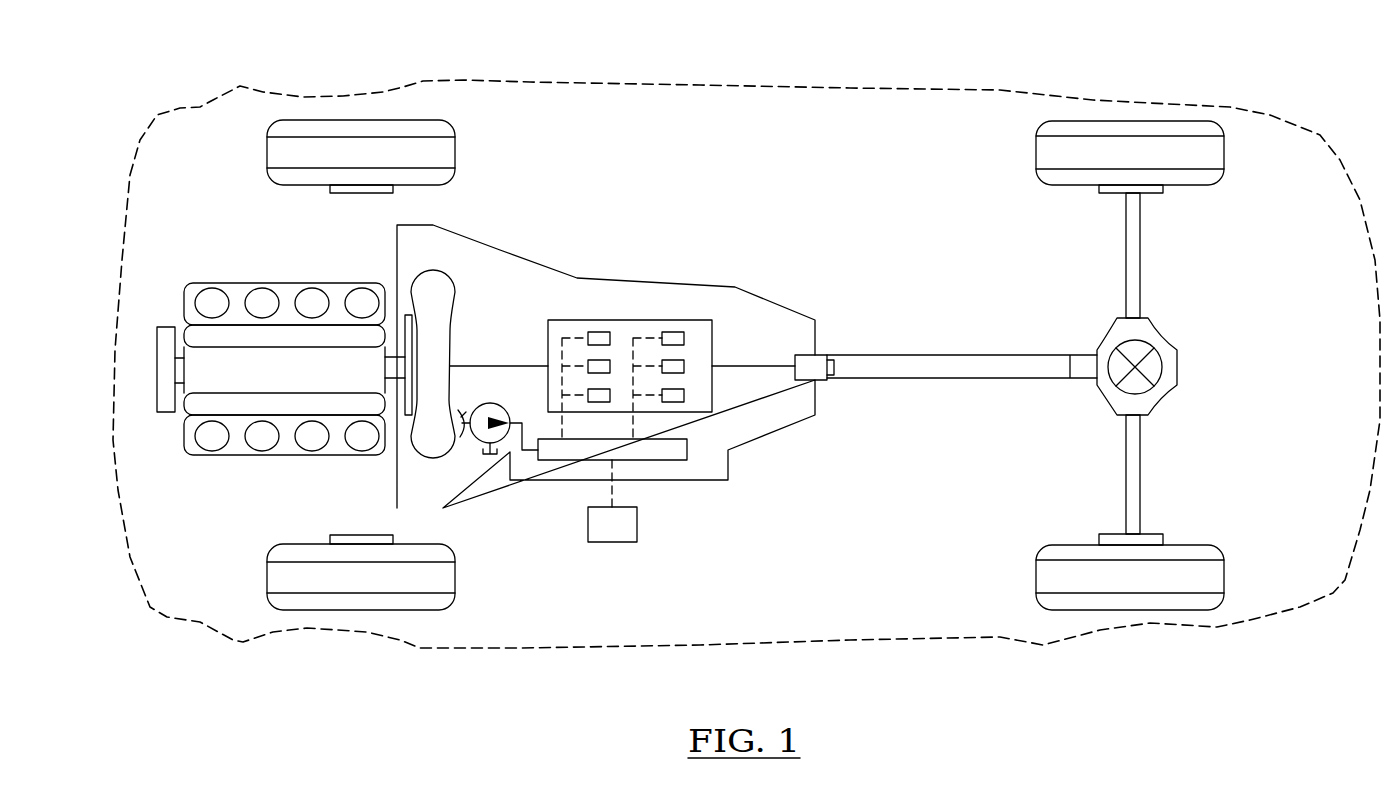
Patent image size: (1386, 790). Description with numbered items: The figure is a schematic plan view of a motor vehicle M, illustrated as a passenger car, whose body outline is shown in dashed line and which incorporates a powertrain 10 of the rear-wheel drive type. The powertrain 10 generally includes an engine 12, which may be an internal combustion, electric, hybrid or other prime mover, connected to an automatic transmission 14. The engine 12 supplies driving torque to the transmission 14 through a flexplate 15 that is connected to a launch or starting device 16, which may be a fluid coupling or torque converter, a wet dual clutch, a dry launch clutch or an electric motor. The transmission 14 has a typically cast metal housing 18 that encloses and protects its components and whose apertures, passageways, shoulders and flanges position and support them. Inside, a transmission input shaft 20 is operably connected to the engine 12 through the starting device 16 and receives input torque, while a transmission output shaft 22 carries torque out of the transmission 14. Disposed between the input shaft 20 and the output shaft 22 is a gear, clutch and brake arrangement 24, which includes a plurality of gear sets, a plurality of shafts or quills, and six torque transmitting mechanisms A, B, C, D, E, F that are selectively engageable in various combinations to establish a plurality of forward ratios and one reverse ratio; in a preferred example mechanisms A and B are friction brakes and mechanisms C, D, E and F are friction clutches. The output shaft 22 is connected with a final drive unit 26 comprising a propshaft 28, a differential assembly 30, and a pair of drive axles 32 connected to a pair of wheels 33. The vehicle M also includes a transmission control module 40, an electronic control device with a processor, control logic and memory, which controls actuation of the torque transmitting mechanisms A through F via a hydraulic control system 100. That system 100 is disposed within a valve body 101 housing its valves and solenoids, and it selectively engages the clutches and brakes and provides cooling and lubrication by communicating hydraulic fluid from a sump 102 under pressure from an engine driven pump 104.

The motor vehicle M is at (619, 80).
The powertrain 10 is at (830, 162).
The engine 12 is at (290, 384).
The automatic transmission 14 is at (620, 262).
The flexplate 15 is at (405, 316).
The launch or starting device 16 is at (444, 276).
The housing 18 is at (784, 300).
The transmission input shaft 20 is at (465, 366).
The transmission output shaft 22 is at (767, 368).
The gear, clutch and brake arrangement 24 is at (636, 335).
The final drive unit 26 is at (1031, 330).
The propshaft 28 is at (893, 354).
The differential assembly 30 is at (1178, 365).
The drive axles 32 is at (1125, 240).
The wheels 33 is at (1205, 187).
The transmission control module 40 is at (601, 545).
The hydraulic control system 100 is at (665, 452).
The valve body 101 is at (548, 462).
The sump 102 is at (487, 460).
The engine driven pump 104 is at (492, 403).
The torque transmitting mechanism A is at (605, 332).
The torque transmitting mechanism B is at (588, 362).
The torque transmitting mechanism C is at (588, 394).
The torque transmitting mechanism D is at (670, 332).
The torque transmitting mechanism E is at (684, 360).
The torque transmitting mechanism F is at (684, 396).